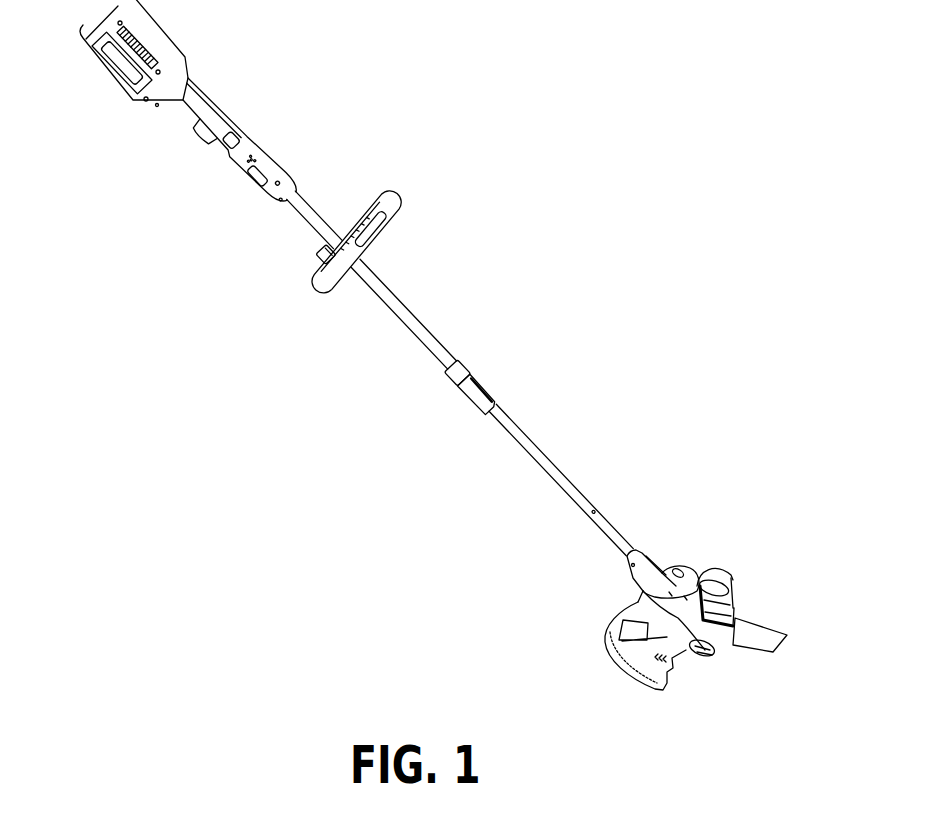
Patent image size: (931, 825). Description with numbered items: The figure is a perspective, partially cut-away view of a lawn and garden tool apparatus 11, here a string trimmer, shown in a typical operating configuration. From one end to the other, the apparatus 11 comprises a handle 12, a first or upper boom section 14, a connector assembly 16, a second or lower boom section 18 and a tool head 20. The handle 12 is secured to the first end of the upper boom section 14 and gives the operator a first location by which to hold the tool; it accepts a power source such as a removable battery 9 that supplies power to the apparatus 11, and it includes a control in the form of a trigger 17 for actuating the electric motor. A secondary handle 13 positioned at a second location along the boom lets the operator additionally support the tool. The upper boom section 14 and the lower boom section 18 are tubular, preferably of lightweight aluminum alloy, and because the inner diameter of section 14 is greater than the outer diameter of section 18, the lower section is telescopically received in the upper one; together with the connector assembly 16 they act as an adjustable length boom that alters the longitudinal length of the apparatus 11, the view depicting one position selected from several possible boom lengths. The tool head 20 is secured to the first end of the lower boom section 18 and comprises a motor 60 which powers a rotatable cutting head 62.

The removable battery 9 is at (96, 39).
The lawn and garden tool apparatus 11 is at (446, 378).
The handle 12 is at (231, 100).
The secondary handle 13 is at (388, 208).
The upper boom section 14 is at (383, 290).
The connector assembly 16 is at (486, 372).
The trigger 17 is at (204, 133).
The lower boom section 18 is at (560, 484).
The tool head 20 is at (717, 620).
The motor 60 is at (725, 605).
The rotatable cutting head 62 is at (700, 655).